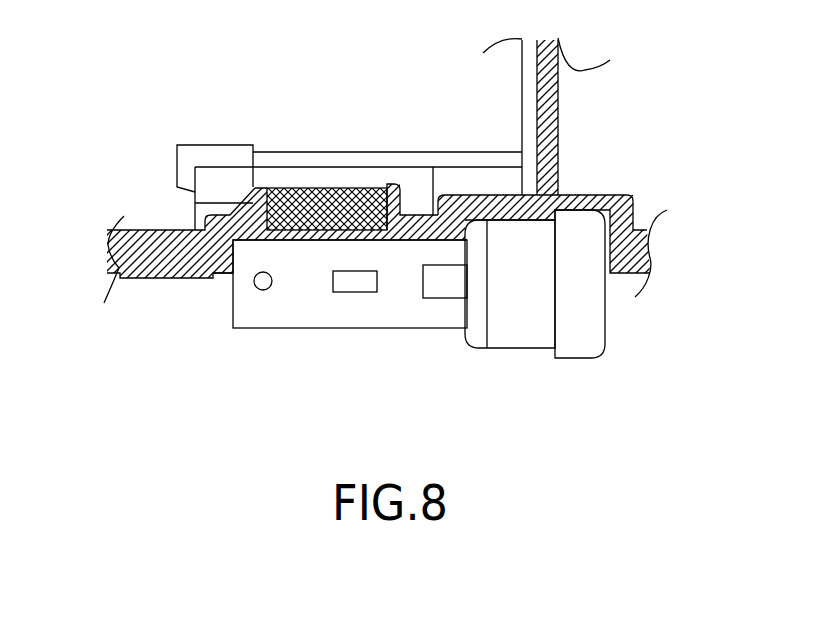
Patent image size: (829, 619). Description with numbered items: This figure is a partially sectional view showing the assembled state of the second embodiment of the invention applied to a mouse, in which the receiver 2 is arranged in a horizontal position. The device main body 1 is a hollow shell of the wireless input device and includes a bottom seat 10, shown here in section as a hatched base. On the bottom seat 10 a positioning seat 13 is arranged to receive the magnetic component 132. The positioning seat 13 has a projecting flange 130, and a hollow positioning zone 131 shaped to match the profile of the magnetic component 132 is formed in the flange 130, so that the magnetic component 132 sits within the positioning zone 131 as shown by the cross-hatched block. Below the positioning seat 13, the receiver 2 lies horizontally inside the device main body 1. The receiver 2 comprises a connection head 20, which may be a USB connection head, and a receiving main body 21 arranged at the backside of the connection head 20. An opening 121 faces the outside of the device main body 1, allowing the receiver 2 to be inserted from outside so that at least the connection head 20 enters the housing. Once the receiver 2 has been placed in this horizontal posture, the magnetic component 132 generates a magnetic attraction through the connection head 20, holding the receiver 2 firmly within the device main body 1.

The device main body 1 is at (563, 138).
The bottom seat 10 is at (150, 267).
The positioning seat 13 is at (349, 126).
The flange 130 is at (255, 207).
The positioning zone 131 is at (282, 196).
The magnetic component 132 is at (327, 203).
The opening 121 is at (230, 242).
The receiver 2 is at (419, 317).
The connection head 20 is at (355, 318).
The receiving main body 21 is at (535, 333).